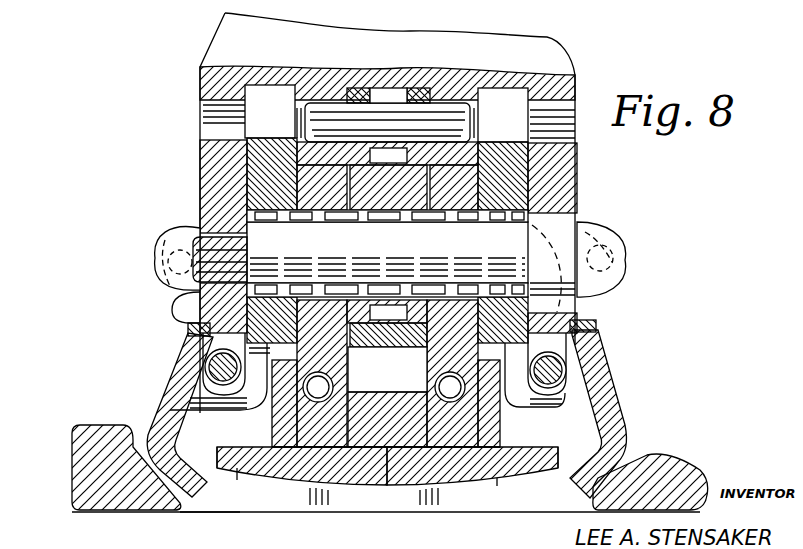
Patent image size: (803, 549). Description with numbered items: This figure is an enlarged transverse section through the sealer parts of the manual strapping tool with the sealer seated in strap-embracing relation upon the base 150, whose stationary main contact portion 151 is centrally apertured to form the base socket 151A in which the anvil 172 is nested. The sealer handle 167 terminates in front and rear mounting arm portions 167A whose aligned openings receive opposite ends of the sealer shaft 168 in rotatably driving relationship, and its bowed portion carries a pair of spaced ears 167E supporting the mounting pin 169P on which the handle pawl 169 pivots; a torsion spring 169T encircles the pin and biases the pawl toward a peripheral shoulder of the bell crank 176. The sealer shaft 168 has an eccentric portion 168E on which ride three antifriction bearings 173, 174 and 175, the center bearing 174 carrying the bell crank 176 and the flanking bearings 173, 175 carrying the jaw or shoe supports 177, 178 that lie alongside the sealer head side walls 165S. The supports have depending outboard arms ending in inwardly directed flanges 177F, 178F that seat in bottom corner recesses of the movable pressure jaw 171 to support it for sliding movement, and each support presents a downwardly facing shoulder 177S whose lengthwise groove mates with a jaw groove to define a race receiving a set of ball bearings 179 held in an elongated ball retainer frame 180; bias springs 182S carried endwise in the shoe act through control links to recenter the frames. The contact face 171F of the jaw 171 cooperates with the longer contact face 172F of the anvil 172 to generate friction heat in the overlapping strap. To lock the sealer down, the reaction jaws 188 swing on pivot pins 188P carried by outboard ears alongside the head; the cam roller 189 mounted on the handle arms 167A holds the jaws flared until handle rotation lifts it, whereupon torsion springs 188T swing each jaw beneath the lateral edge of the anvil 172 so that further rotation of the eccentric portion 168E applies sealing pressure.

The sealer handle 167 is at (507, 48).
The ears 167E is at (297, 143).
The mounting arm portions 167A is at (217, 180).
The sealer head side walls 165S is at (252, 152).
The handle pawl 169 is at (413, 100).
The torsion spring 169T is at (380, 100).
The mounting pin 169P is at (320, 112).
The antifriction bearing 173 is at (308, 193).
The center antifriction bearing 174 is at (388, 187).
The antifriction bearing 175 is at (454, 187).
The sealer shaft 168 is at (187, 229).
The eccentric portion 168E is at (387, 252).
The bell crank 176 is at (390, 292).
The cam roller 189 is at (158, 247).
The jaw or shoe support 177 is at (362, 373).
The downwardly facing shoulder 177S is at (306, 398).
The jaw or shoe support 178 is at (463, 373).
The ball bearings 179 is at (384, 387).
The ball retainer frame 180 is at (387, 397).
The bias springs 182S is at (295, 440).
The movable pressure jaw 171 is at (311, 476).
The contact face 171F is at (284, 460).
The anvil 172 is at (472, 476).
The contact face 172F is at (481, 460).
The inwardly directed flange 177F is at (242, 482).
The inwardly directed flange 178F is at (519, 489).
The main contact portion 151 is at (85, 462).
The base socket 151A is at (218, 506).
The base 150 is at (285, 512).
The reaction jaws 188 is at (168, 419).
The pivot pins 188P is at (210, 352).
The torsion springs 188T is at (205, 383).